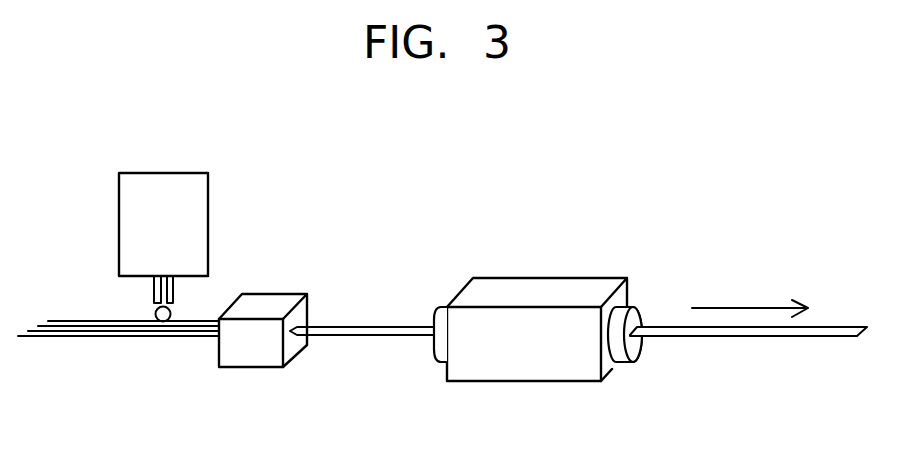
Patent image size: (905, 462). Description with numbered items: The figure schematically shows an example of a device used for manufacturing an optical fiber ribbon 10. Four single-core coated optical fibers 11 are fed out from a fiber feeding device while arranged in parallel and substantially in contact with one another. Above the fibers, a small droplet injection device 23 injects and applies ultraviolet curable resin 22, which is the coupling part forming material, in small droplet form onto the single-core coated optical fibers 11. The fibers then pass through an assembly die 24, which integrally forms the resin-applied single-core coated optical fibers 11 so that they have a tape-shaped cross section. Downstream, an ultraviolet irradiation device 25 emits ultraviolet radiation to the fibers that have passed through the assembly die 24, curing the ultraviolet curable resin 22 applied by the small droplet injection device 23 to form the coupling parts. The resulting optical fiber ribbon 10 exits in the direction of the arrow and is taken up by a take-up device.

The optical fiber ribbon 10 is at (758, 332).
The single-core coated optical fibers 11 is at (80, 338).
The ultraviolet curable resin 22 is at (156, 312).
The small droplet injection device 23 is at (163, 182).
The assembly die 24 is at (253, 359).
The ultraviolet irradiation device 25 is at (533, 367).